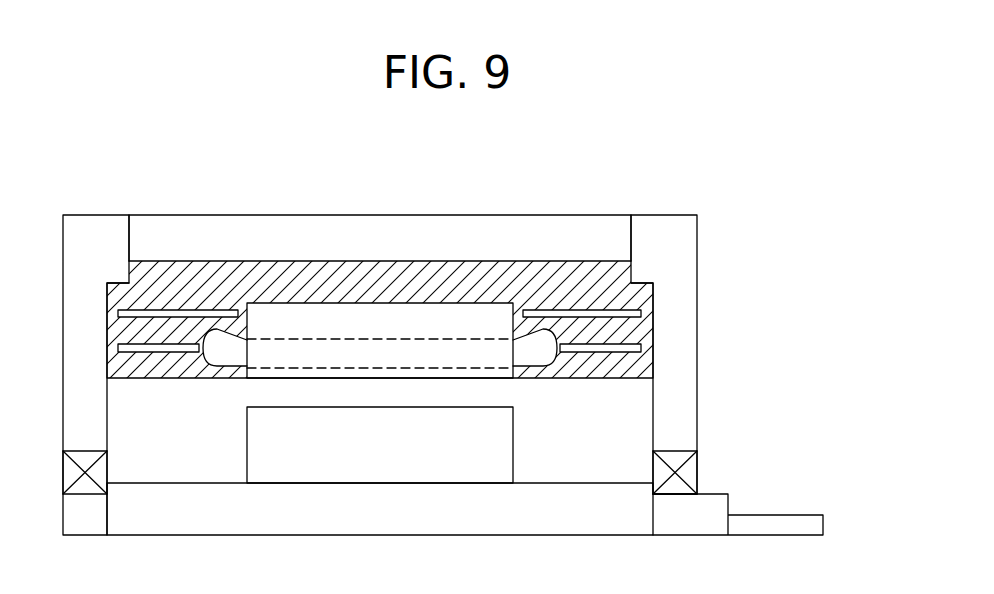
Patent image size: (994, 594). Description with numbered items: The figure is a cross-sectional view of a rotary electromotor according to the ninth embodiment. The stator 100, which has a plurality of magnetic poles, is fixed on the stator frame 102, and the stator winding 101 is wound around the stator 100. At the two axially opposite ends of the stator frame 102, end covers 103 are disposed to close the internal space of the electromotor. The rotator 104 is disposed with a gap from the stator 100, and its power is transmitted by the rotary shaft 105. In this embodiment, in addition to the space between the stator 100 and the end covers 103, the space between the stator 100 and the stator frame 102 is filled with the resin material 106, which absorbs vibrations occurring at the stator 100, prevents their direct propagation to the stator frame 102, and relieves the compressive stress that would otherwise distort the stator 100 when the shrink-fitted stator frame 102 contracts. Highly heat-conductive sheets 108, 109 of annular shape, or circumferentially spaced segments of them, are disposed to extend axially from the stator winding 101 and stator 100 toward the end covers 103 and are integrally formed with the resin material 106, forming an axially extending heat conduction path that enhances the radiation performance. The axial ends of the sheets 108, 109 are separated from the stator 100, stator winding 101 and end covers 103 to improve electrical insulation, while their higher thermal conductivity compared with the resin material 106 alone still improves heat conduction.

The stator 100 is at (380, 340).
The stator winding 101 is at (502, 357).
The stator frame 102 is at (492, 228).
The end covers 103 is at (92, 228).
The rotator 104 is at (380, 445).
The rotary shaft 105 is at (380, 509).
The resin material 106 is at (173, 297).
The highly heat-conductive sheet 108 is at (570, 313).
The highly heat-conductive sheet 109 is at (186, 347).